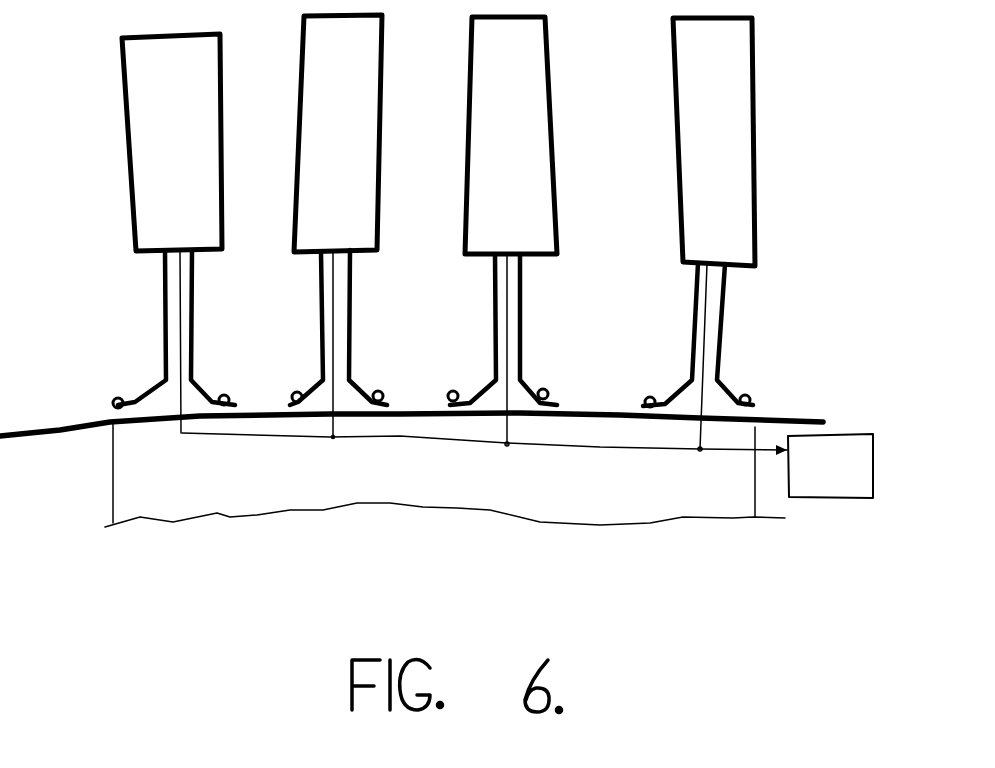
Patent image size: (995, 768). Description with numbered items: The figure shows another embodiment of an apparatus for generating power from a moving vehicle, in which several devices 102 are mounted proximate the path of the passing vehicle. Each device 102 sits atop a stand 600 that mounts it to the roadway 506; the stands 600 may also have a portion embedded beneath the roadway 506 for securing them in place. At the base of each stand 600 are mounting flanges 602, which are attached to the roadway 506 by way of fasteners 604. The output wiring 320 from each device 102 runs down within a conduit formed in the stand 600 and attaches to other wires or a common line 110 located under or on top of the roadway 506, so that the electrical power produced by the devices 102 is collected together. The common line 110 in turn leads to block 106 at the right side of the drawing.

The electronic component 102 is at (757, 132).
The lead 600 is at (523, 330).
The first solder fillet 602 is at (475, 390).
The second solder fillet 604 is at (543, 388).
The conductive trace 320 is at (711, 329).
The surface layer 506 is at (797, 415).
The controller 106 is at (786, 466).
The substrate 110 is at (640, 448).